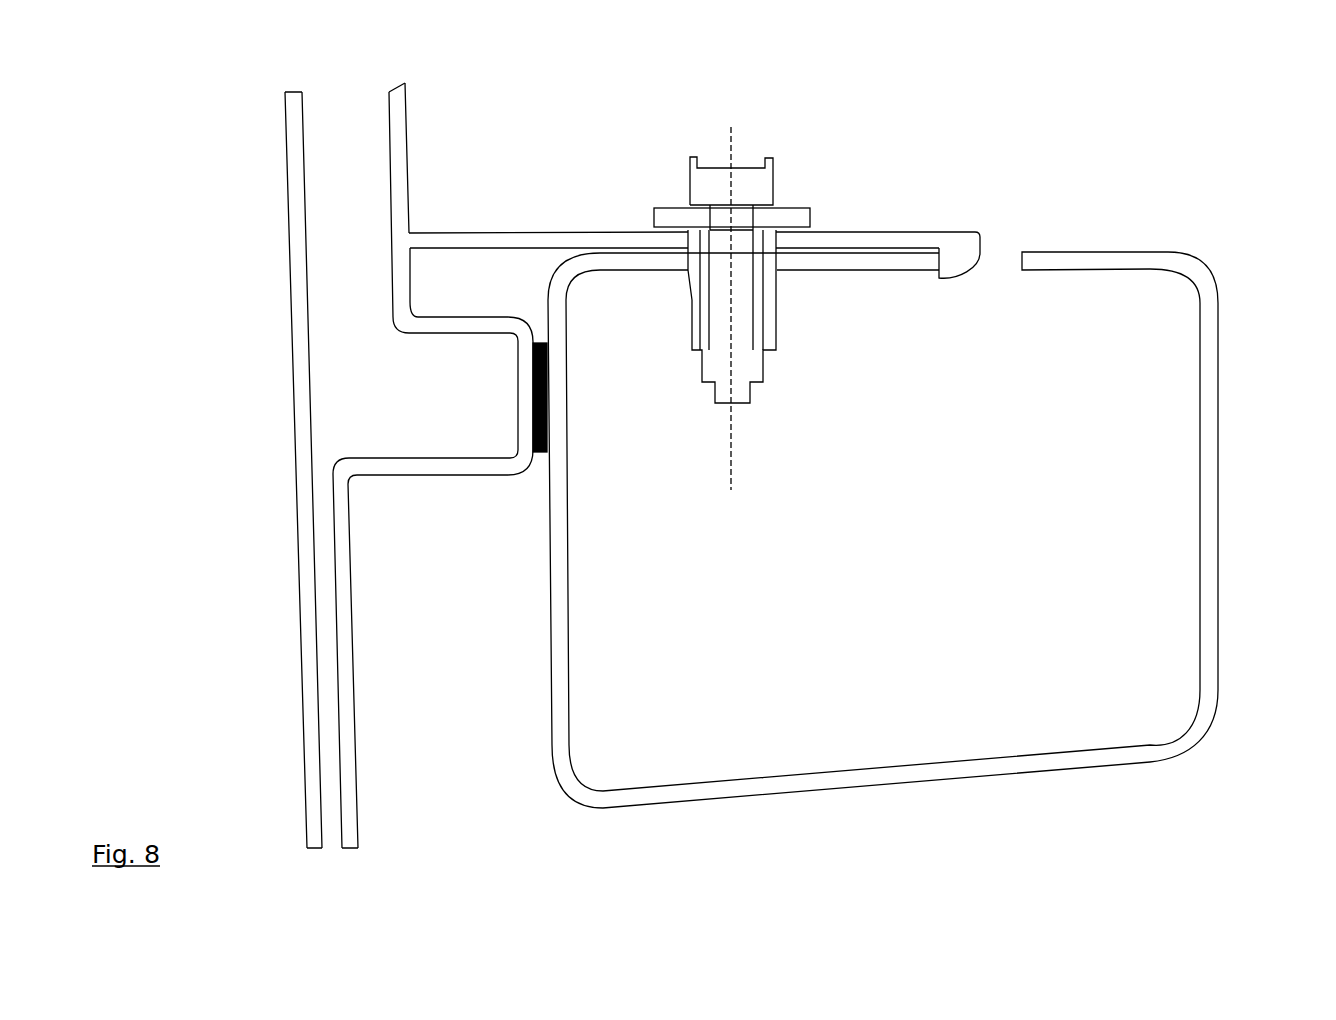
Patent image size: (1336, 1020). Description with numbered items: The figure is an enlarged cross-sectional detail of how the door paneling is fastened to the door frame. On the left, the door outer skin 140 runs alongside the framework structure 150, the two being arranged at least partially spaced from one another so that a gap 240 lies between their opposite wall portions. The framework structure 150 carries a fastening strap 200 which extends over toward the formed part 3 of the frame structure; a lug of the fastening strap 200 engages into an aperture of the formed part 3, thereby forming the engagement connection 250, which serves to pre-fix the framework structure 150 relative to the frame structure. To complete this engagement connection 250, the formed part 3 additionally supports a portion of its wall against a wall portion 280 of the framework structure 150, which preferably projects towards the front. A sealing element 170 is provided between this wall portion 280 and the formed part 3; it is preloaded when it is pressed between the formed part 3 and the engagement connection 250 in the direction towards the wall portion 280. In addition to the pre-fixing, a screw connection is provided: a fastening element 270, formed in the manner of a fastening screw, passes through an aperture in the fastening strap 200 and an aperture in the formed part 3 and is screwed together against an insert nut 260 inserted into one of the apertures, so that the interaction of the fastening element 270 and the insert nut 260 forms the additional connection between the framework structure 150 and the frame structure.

The formed part 3 is at (1218, 435).
The door outer skin 140 is at (300, 407).
The framework structure 150 is at (633, 485).
The sealing element 170 is at (547, 413).
The fastening strap 200 is at (852, 234).
The gap 240 is at (327, 629).
The engagement connection 250 is at (958, 245).
The insert nut 260 is at (775, 292).
The fastening element 270 is at (745, 177).
The wall portion 280 is at (494, 470).